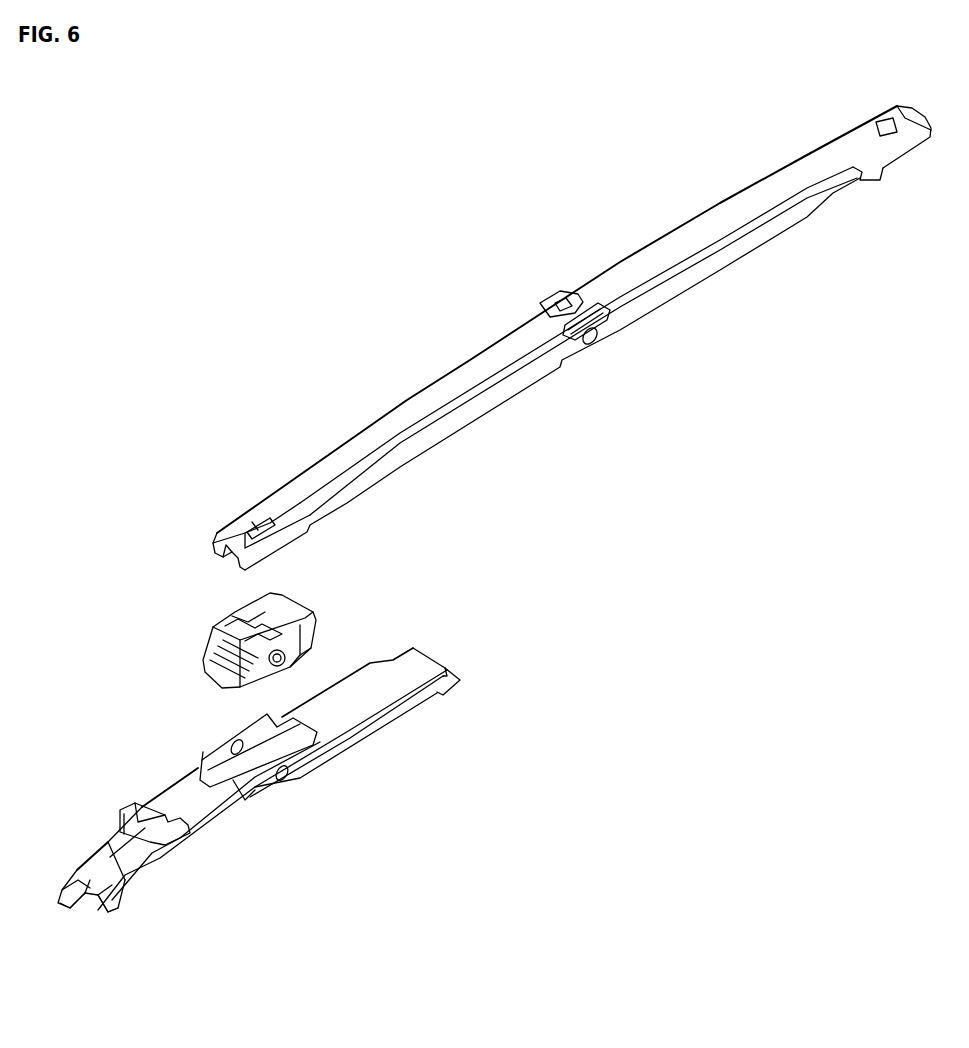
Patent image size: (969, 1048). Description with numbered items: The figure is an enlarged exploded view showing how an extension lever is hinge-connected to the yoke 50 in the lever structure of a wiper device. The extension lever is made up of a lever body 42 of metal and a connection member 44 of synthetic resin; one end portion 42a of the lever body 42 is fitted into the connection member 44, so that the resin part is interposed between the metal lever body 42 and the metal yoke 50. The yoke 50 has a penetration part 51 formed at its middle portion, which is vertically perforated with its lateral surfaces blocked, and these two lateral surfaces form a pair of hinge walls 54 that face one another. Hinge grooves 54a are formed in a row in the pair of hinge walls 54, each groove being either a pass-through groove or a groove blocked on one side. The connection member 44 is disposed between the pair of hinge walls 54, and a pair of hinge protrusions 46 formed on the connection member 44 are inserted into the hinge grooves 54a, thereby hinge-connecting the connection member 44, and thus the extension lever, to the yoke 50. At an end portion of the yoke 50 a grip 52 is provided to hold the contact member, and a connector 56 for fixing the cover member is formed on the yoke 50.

The lever body 42 is at (468, 367).
The one end portion of the lever body 42a is at (230, 518).
The connection member 44 is at (245, 620).
The hinge protrusions 46 is at (290, 662).
The yoke 50 is at (345, 750).
The penetration part 51 is at (235, 786).
The grip 52 is at (110, 910).
The hinge walls 54 is at (200, 753).
The hinge grooves 54a is at (227, 733).
The connector 56 is at (125, 812).